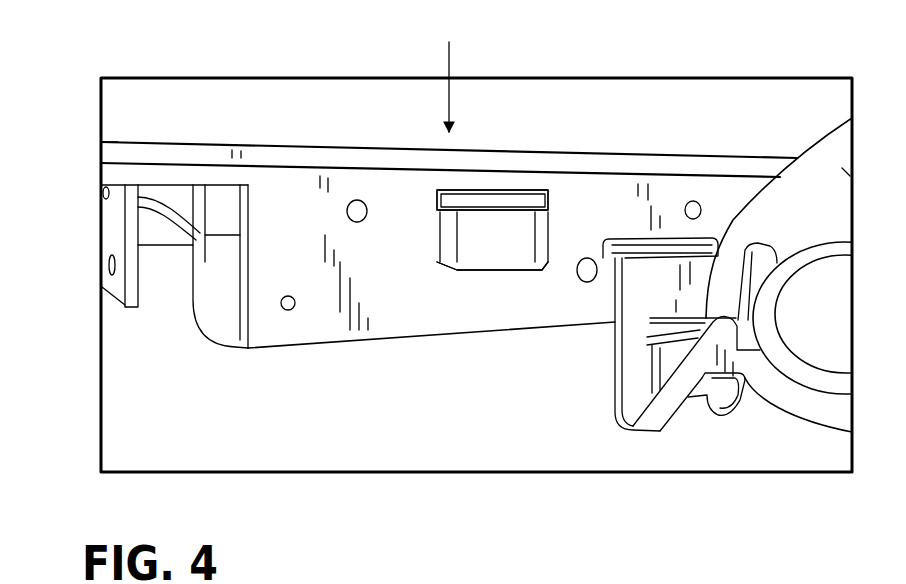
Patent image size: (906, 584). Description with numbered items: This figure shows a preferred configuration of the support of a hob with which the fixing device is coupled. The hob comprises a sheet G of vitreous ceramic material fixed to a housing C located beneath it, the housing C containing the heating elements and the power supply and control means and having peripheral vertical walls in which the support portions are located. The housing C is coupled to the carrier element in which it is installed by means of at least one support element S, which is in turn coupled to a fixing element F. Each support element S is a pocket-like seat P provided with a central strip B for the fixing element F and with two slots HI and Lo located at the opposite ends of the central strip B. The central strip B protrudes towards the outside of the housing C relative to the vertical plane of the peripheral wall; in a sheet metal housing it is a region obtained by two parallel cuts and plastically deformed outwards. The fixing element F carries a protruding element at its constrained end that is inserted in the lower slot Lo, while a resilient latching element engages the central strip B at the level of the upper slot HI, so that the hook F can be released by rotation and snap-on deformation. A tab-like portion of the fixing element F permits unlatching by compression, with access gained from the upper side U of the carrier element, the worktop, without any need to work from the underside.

The sheet G is at (118, 152).
The pocket-like seat P is at (405, 143).
The upper side U is at (448, 71).
The upper slot HI is at (500, 190).
The central strip B is at (507, 242).
The housing C is at (300, 238).
The support element S is at (281, 308).
The lower slot Lo is at (485, 272).
The fixing element F is at (728, 420).